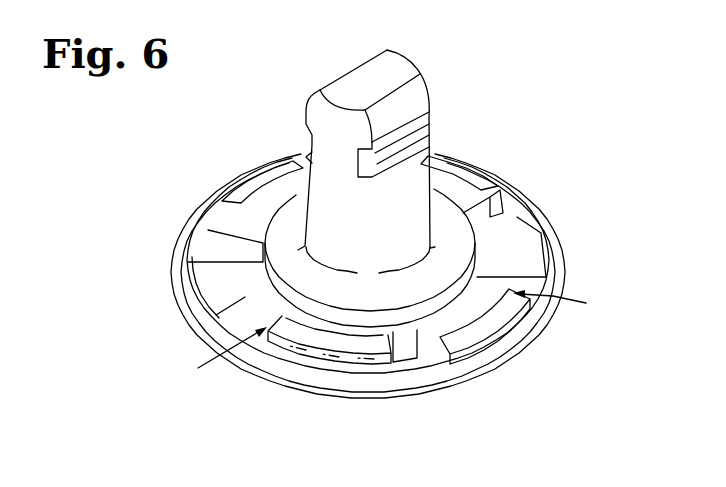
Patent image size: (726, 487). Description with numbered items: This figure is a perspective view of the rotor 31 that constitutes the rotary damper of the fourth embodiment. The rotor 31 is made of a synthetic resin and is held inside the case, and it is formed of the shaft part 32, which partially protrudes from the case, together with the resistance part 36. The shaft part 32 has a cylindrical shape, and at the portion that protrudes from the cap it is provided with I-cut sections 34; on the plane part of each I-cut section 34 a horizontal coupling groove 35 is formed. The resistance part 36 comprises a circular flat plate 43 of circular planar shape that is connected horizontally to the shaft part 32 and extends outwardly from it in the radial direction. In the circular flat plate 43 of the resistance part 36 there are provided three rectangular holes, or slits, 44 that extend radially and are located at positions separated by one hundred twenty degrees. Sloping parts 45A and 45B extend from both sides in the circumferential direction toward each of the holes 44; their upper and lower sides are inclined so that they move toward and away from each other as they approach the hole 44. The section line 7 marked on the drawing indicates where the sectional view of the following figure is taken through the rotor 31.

The section line 7— 7 is at (392, 337).
The rotor 31 is at (160, 259).
The shaft part 32 is at (360, 87).
The I-cut section 34 is at (434, 168).
The horizontal coupling groove 35 is at (412, 133).
The resistance part 36 is at (368, 275).
The circular flat plate 43 is at (540, 333).
The rectangular hole (slit) 44 is at (215, 250).
The sloping part 45A is at (222, 288).
The sloping part 45B is at (260, 183).